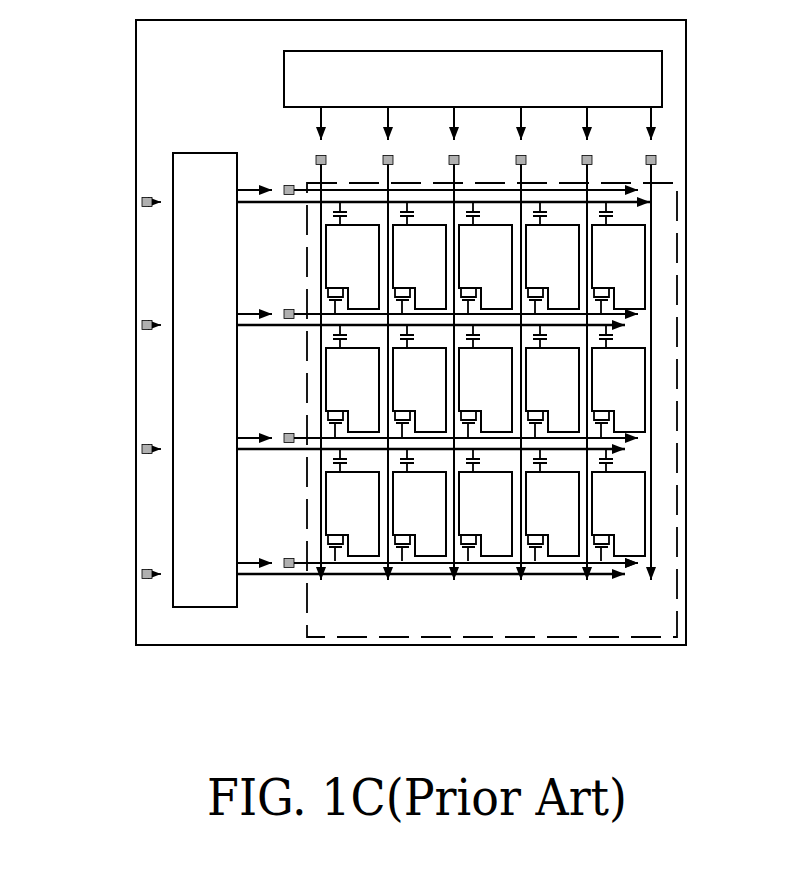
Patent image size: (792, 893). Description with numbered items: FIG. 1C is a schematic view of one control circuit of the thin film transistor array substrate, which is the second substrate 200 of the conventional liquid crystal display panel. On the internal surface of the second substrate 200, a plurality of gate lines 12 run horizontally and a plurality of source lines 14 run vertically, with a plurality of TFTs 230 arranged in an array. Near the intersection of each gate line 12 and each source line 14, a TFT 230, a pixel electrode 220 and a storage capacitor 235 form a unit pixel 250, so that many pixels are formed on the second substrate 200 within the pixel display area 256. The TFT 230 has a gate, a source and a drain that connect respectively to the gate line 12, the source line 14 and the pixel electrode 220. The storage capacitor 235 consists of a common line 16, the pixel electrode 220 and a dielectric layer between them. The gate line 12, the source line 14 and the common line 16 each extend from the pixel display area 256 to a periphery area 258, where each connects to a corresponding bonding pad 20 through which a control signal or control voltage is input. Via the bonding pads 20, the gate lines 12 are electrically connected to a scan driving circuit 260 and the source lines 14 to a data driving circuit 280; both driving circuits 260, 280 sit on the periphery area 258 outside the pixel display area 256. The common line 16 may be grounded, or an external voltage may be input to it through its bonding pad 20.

The second substrate 200 is at (696, 322).
The pixel display area 256 is at (686, 617).
The data driving circuit 280 is at (663, 103).
The scan driving circuit 260 is at (198, 531).
The source line 14 is at (583, 595).
The periphery area 258 is at (662, 132).
The common line 16 is at (647, 447).
The gate line 12 is at (648, 565).
The unit pixel 250 is at (657, 556).
The bonding pad 20 is at (142, 202).
The pixel electrode 220 is at (640, 512).
The storage capacitor 235 is at (617, 462).
The TFT 230 is at (609, 535).